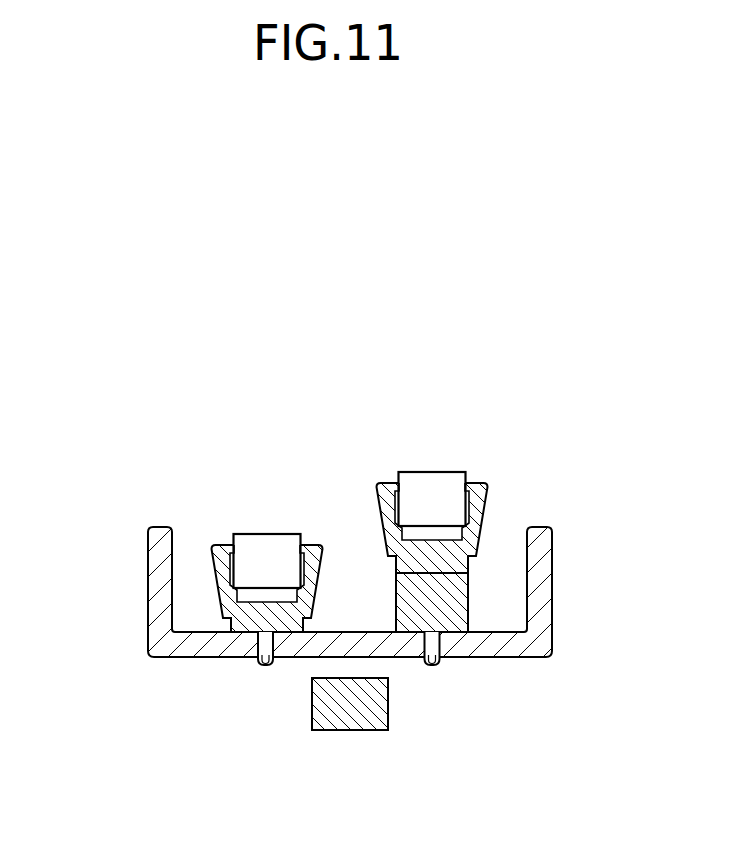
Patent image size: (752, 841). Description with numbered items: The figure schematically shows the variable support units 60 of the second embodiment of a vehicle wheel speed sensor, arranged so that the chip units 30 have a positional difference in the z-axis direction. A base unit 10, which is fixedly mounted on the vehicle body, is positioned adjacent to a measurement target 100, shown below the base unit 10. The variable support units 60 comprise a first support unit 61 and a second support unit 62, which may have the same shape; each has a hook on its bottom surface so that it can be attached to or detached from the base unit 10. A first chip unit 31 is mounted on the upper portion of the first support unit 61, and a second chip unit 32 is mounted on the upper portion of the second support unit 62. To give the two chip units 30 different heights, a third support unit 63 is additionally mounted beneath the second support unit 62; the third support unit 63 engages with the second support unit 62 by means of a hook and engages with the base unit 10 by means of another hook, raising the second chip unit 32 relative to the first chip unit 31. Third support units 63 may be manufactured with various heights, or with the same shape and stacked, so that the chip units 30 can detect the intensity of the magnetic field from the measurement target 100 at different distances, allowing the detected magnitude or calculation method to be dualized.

The base unit 10 is at (542, 598).
The chip units 30 is at (241, 592).
The first chip unit 31 is at (247, 570).
The second chip unit 32 is at (442, 510).
The variable support units 60 is at (345, 472).
The first support unit 61 is at (318, 540).
The second support unit 62 is at (480, 493).
The third support unit 63 is at (403, 605).
The measurement target 100 is at (352, 718).